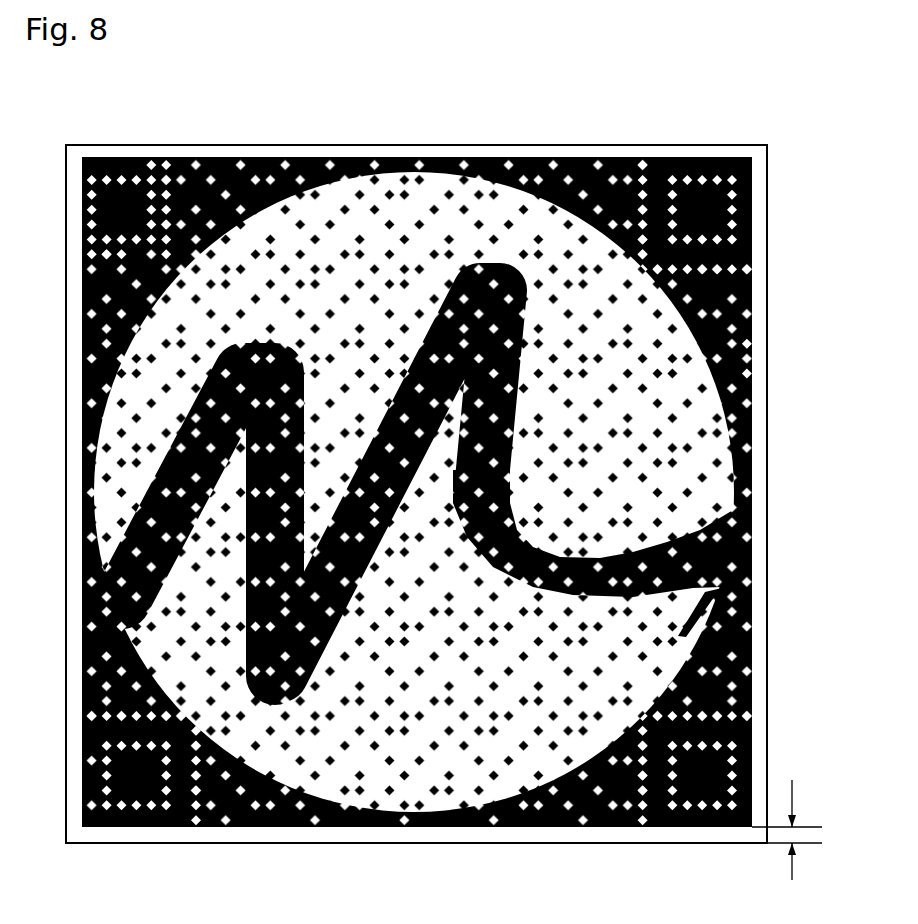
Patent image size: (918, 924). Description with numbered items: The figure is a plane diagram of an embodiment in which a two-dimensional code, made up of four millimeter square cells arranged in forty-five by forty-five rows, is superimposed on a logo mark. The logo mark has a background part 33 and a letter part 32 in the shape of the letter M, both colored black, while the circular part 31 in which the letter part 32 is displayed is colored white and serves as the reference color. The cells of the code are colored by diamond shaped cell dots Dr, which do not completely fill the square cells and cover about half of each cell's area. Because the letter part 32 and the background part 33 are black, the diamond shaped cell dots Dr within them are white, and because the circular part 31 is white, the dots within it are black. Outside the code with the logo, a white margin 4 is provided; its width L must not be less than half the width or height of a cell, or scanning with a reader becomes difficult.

The margin 4 is at (770, 193).
The background part 33 is at (752, 233).
The diamond shaped cell dots Dr is at (741, 373).
The letter part 32 is at (650, 547).
The circular part 31 is at (750, 593).
The width of the margin L is at (800, 830).